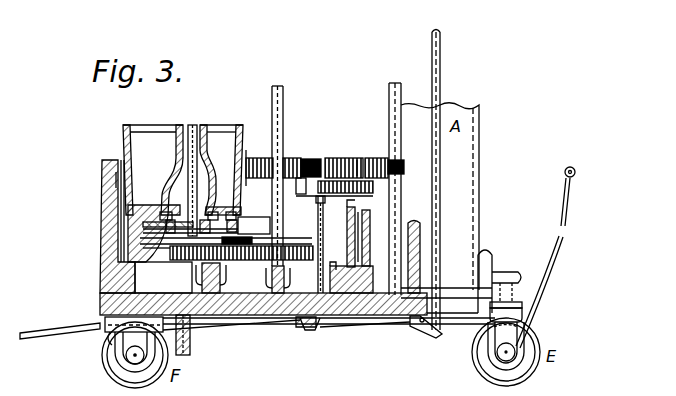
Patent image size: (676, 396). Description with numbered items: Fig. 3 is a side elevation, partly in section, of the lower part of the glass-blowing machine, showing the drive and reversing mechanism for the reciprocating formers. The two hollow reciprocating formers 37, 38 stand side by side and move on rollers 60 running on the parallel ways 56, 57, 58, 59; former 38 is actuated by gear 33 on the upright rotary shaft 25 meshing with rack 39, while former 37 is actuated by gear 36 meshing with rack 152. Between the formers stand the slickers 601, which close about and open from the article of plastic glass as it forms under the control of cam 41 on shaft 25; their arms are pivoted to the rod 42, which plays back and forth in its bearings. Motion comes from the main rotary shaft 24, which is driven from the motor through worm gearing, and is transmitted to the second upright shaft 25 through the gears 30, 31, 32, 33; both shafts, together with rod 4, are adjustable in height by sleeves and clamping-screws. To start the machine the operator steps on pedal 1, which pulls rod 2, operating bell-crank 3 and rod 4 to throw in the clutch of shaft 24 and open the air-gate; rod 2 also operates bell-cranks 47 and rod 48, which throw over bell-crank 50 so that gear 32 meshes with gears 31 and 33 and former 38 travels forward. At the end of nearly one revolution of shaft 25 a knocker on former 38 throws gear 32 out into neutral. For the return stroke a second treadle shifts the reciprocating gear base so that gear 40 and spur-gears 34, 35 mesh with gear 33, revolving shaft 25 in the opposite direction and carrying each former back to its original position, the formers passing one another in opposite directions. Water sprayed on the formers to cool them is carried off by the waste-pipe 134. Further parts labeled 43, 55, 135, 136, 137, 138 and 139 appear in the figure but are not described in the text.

The pedal 1 is at (60, 339).
The rod 2 is at (228, 318).
The bell-crank 3 is at (440, 328).
The rod 4 is at (445, 180).
The main rotary shaft 24 is at (407, 188).
The second upright rotary shaft 25 is at (291, 176).
The gear 30 is at (404, 165).
The gear 31 is at (376, 159).
The gear 32 is at (313, 158).
The gear 33 is at (285, 160).
The spur-gear 34 is at (343, 187).
The spur-gear 35 is at (338, 160).
The gear 36 is at (241, 259).
The reciprocating former 37 is at (153, 193).
The reciprocating former 38 is at (221, 170).
The rack 39 is at (249, 166).
The gear 40 is at (373, 233).
The cam 41 is at (283, 279).
The rod 42 is at (226, 230).
The bearing post 43 is at (258, 272).
The bell-crank 47 is at (358, 283).
The rod 48 is at (349, 246).
The bell-crank 50 is at (328, 244).
The shaft 55 is at (357, 160).
The way 56 is at (168, 228).
The way 57 is at (213, 237).
The way 58 is at (235, 227).
The way 59 is at (213, 248).
The roller 60 is at (187, 212).
The waste-pipe 134 is at (188, 337).
The bar 135 is at (236, 326).
The bracket 136 is at (299, 322).
The brace 137 is at (386, 318).
The bar 138 is at (341, 322).
The side wall 139 is at (125, 178).
The rack 152 is at (163, 277).
The slicker 601 is at (198, 124).